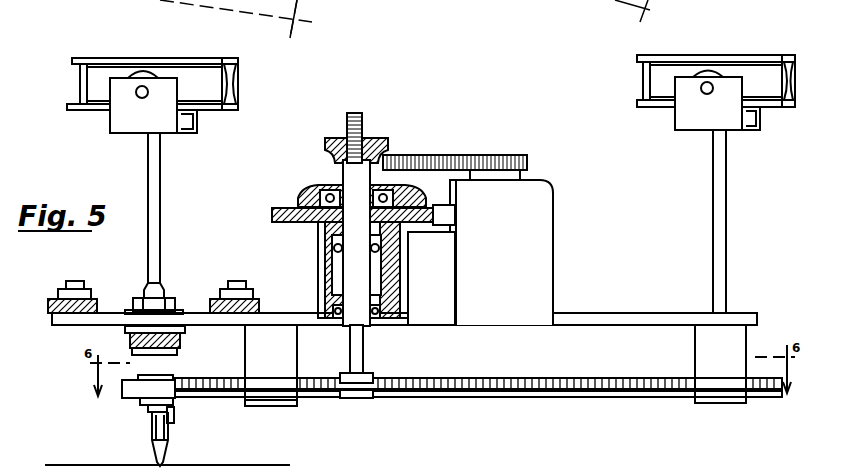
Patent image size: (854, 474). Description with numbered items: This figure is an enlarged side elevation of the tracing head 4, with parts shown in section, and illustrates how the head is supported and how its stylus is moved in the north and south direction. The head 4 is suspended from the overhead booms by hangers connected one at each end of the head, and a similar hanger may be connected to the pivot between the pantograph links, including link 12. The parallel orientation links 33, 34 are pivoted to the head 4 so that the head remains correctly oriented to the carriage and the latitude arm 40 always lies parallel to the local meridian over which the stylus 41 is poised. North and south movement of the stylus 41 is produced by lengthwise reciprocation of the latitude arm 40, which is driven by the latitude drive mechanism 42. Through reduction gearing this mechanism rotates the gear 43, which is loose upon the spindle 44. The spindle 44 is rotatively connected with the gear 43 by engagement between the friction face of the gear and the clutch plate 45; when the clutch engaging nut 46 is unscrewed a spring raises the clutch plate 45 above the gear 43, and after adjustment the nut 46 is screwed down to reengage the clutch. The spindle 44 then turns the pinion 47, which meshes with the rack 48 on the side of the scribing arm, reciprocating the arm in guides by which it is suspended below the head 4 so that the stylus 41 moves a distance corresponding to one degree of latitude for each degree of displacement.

The head 4 is at (578, 314).
The link 12 is at (130, 338).
The parallel orientation link 33 is at (208, 305).
The parallel orientation link 34 is at (46, 305).
The latitude arm 40 is at (128, 390).
The stylus 41 is at (166, 458).
The latitude drive mechanism 42 is at (468, 240).
The gear 43 is at (272, 214).
The spindle 44 is at (360, 115).
The clutch plate 45 is at (300, 190).
The clutch engaging nut 46 is at (325, 147).
The pinion 47 is at (373, 395).
The rack 48 is at (455, 385).